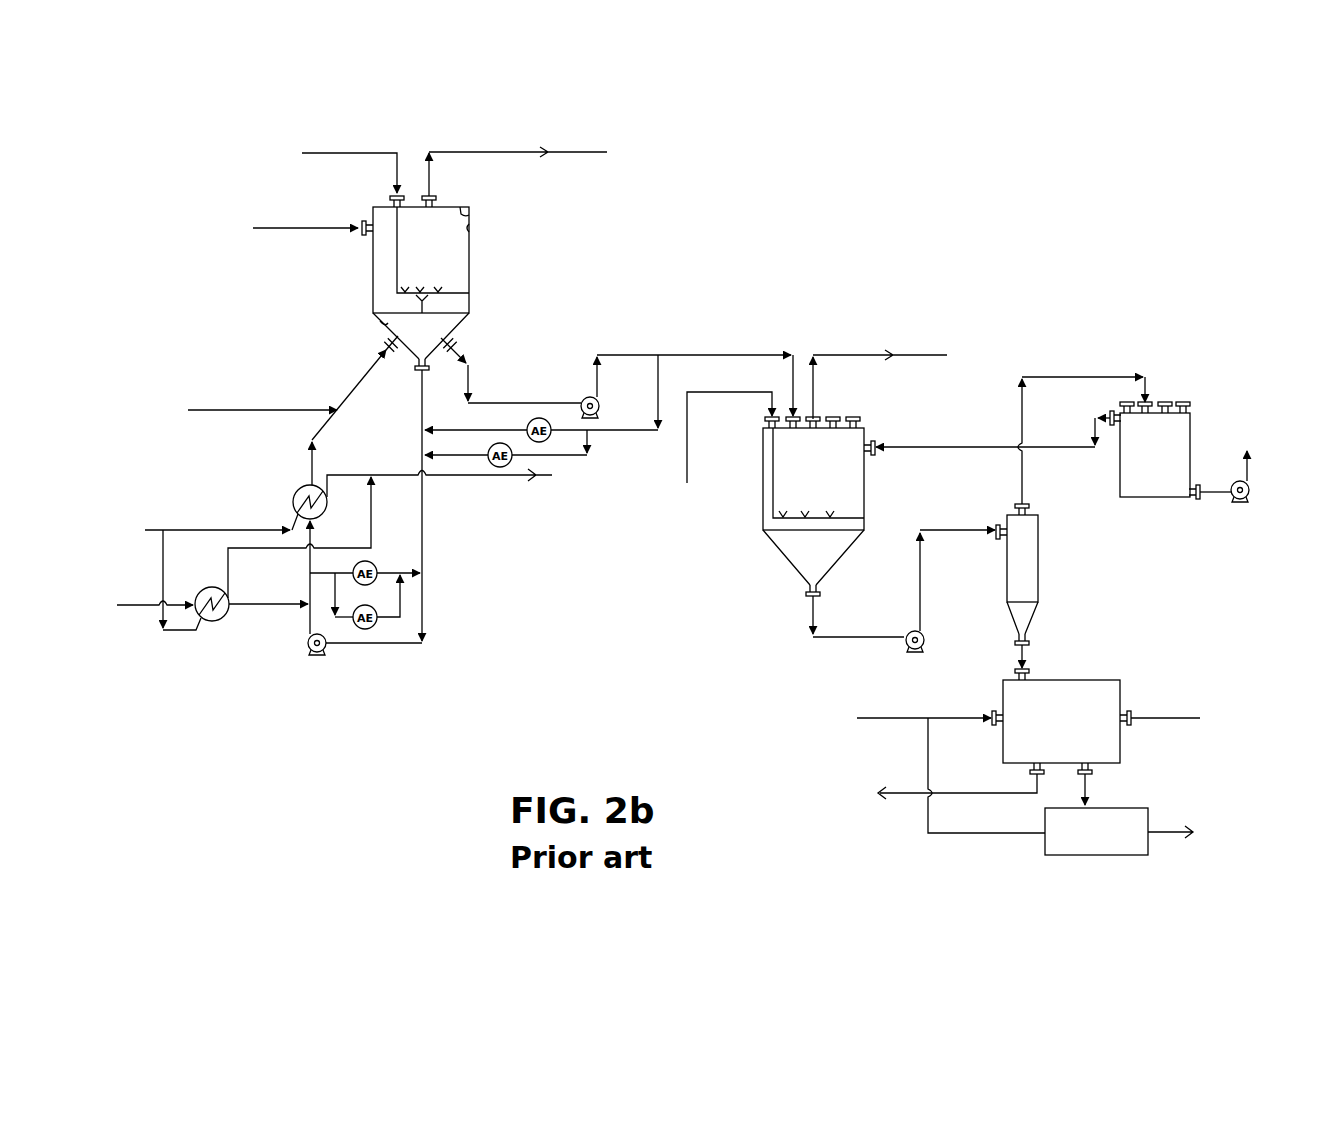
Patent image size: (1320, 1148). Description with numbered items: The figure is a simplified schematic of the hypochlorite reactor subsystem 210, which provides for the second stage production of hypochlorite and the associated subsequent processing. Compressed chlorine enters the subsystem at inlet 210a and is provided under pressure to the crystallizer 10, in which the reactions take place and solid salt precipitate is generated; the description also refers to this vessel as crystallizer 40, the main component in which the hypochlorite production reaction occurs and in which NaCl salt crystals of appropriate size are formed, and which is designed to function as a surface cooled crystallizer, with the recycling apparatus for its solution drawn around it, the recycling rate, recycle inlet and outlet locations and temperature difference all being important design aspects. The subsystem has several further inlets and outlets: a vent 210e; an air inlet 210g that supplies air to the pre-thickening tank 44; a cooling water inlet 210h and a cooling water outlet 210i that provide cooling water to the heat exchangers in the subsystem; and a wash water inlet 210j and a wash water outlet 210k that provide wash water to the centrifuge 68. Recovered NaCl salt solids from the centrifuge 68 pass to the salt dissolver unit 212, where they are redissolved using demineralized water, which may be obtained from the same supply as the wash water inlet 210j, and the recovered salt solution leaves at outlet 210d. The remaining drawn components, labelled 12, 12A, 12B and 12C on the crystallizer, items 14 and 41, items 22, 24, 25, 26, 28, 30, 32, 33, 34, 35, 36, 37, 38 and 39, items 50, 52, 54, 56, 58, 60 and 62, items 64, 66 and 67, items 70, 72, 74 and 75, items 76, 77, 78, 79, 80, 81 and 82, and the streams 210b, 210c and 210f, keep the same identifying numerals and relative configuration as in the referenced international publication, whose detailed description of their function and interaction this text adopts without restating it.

The crystallizer 10 is at (473, 256).
The vessel lower section 12 is at (370, 306).
The vessel port 12A is at (472, 230).
The inlet valve 12B is at (382, 328).
The vessel port 12C is at (470, 214).
The heat exchanger 14 is at (299, 489).
The bottom outlet flange 22 is at (428, 371).
The outlet valve 24 is at (461, 342).
The pump 25 is at (600, 402).
The side inlet 26 is at (363, 240).
The top outlet 28 is at (440, 196).
The top inlet 30 is at (390, 196).
The inlet nozzle 32 is at (393, 353).
The recirculation line 33 is at (424, 522).
The pump 34 is at (309, 645).
The analyzer line 35 is at (308, 585).
The feed line 36 is at (142, 614).
The inlet line 37 is at (318, 436).
The feed line 38 is at (305, 410).
The distributor 39 is at (430, 299).
The crystallizer 40 is at (470, 290).
The heat exchanger 41 is at (205, 587).
The pre-thickening tank 44 is at (765, 511).
The second vessel 50 is at (837, 485).
The inlet flange 52 is at (788, 413).
The inlet flange 54 is at (768, 425).
The distributor 56 is at (840, 513).
The outlet flange 58 is at (818, 415).
The bottom outlet 60 is at (810, 596).
The pump 62 is at (925, 642).
The cyclone inlet 64 is at (996, 525).
The cyclone separator 66 is at (1006, 589).
The cyclone outlet 67 is at (1026, 655).
The centrifuge 68 is at (1061, 721).
The dryer inlet 70 is at (995, 723).
The dryer outlet 72 is at (1131, 712).
The dryer bottom outlet 74 is at (1094, 777).
The recycle line 75 is at (280, 234).
The cyclone overhead outlet 76 is at (1030, 507).
The tank inlet 77 is at (1149, 400).
The storage tank 78 is at (1180, 499).
The tank side port 79 is at (1118, 421).
The vessel side inlet 80 is at (872, 443).
The pump 81 is at (1250, 492).
The pump outlet line 82 is at (1243, 470).
The hypochlorite reactor subsystem 210 is at (1054, 190).
The inlet 210a is at (340, 153).
The stream b 210b is at (128, 618).
The stream c 210c is at (220, 408).
The outlet 210d is at (1165, 832).
The vent 210e is at (566, 152).
The stream f 210f is at (1250, 465).
The air inlet 210g is at (686, 466).
The cooling water inlet 210h is at (150, 528).
The cooling water outlet 210i is at (486, 482).
The wash water inlet 210j is at (892, 714).
The wash water outlet 210k is at (1178, 718).
The salt dissolver unit 212 is at (1075, 850).